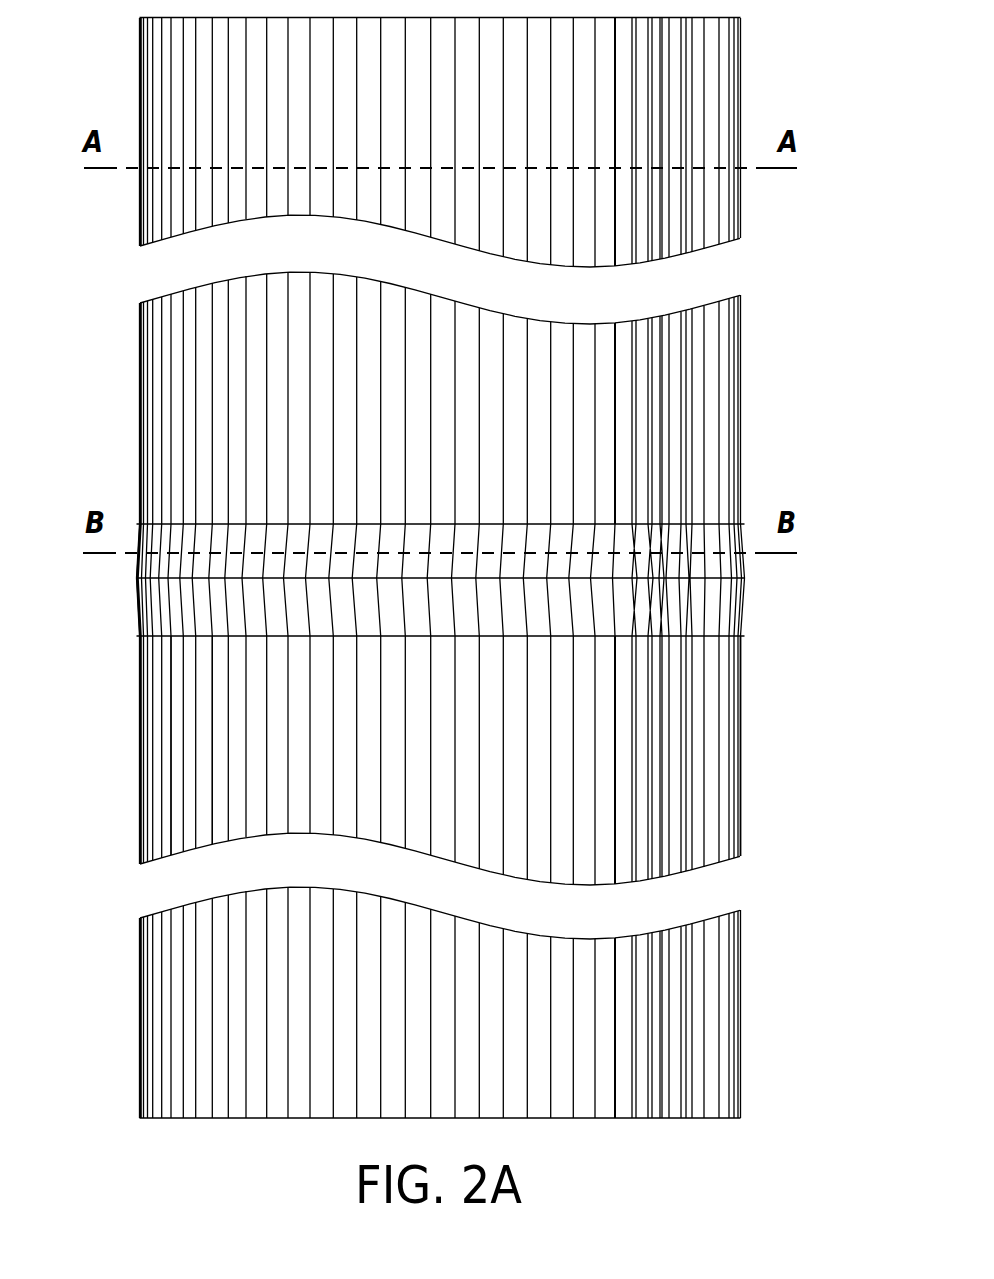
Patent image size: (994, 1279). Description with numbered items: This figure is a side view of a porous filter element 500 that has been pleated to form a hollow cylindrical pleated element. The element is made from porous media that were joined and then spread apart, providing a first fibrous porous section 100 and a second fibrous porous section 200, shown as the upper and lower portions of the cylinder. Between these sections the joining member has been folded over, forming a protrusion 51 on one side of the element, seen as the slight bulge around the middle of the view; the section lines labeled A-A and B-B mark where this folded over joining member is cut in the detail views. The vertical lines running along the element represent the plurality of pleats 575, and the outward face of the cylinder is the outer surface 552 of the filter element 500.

The porous filter element 500 is at (88, 1077).
The first fibrous porous section 100 is at (736, 430).
The second fibrous porous section 200 is at (737, 760).
The protrusion 51 is at (137, 568).
The outer surface 552 is at (737, 692).
The pleats 575 is at (617, 351).